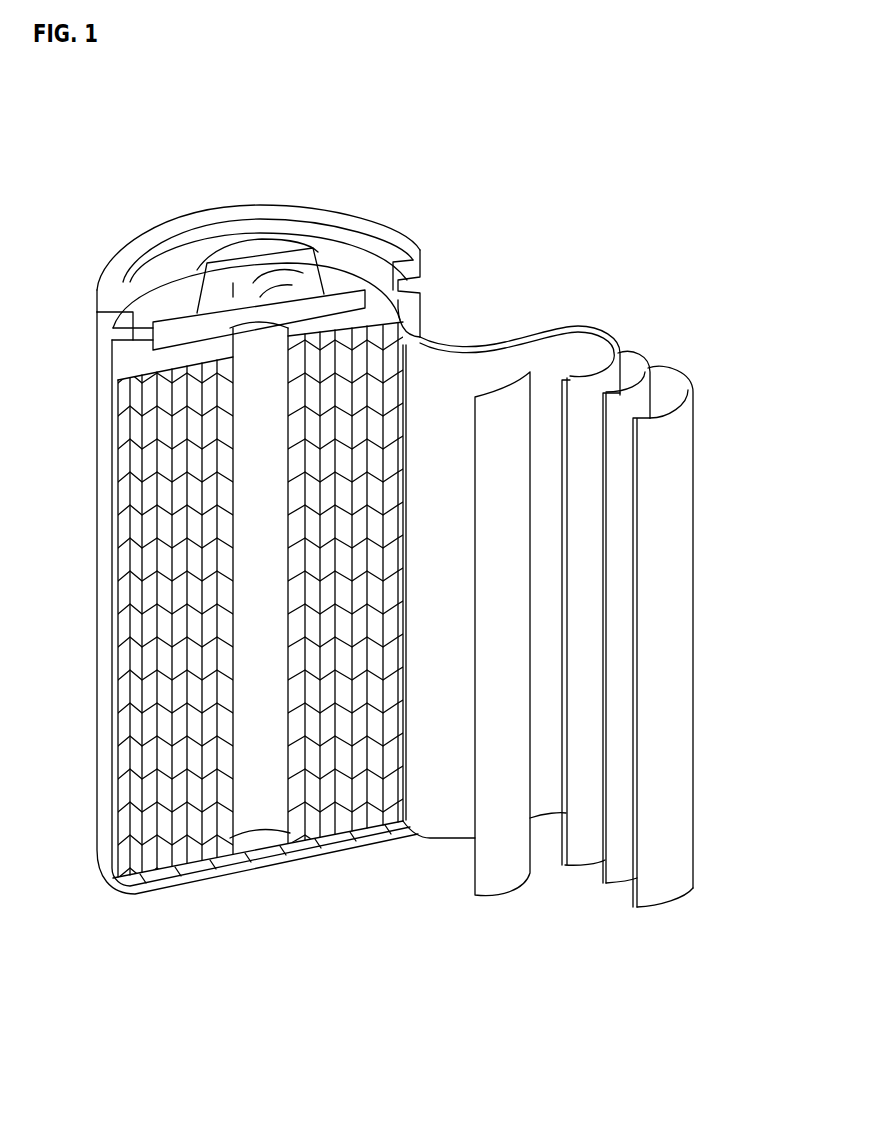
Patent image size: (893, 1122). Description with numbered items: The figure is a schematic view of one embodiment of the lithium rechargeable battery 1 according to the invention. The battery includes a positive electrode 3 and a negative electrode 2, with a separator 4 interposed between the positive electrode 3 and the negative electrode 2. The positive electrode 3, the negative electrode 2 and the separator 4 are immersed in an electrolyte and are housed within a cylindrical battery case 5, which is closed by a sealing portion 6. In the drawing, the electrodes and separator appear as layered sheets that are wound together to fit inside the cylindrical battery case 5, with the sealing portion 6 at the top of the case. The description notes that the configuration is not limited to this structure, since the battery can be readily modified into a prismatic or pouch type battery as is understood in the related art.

The electrode assembly 1 is at (658, 298).
The negative electrode 2 is at (678, 494).
The positive electrode 3 is at (581, 392).
The separator 4 is at (641, 397).
The cylindrical battery case 5 is at (100, 811).
The sealing portion 6 is at (272, 248).